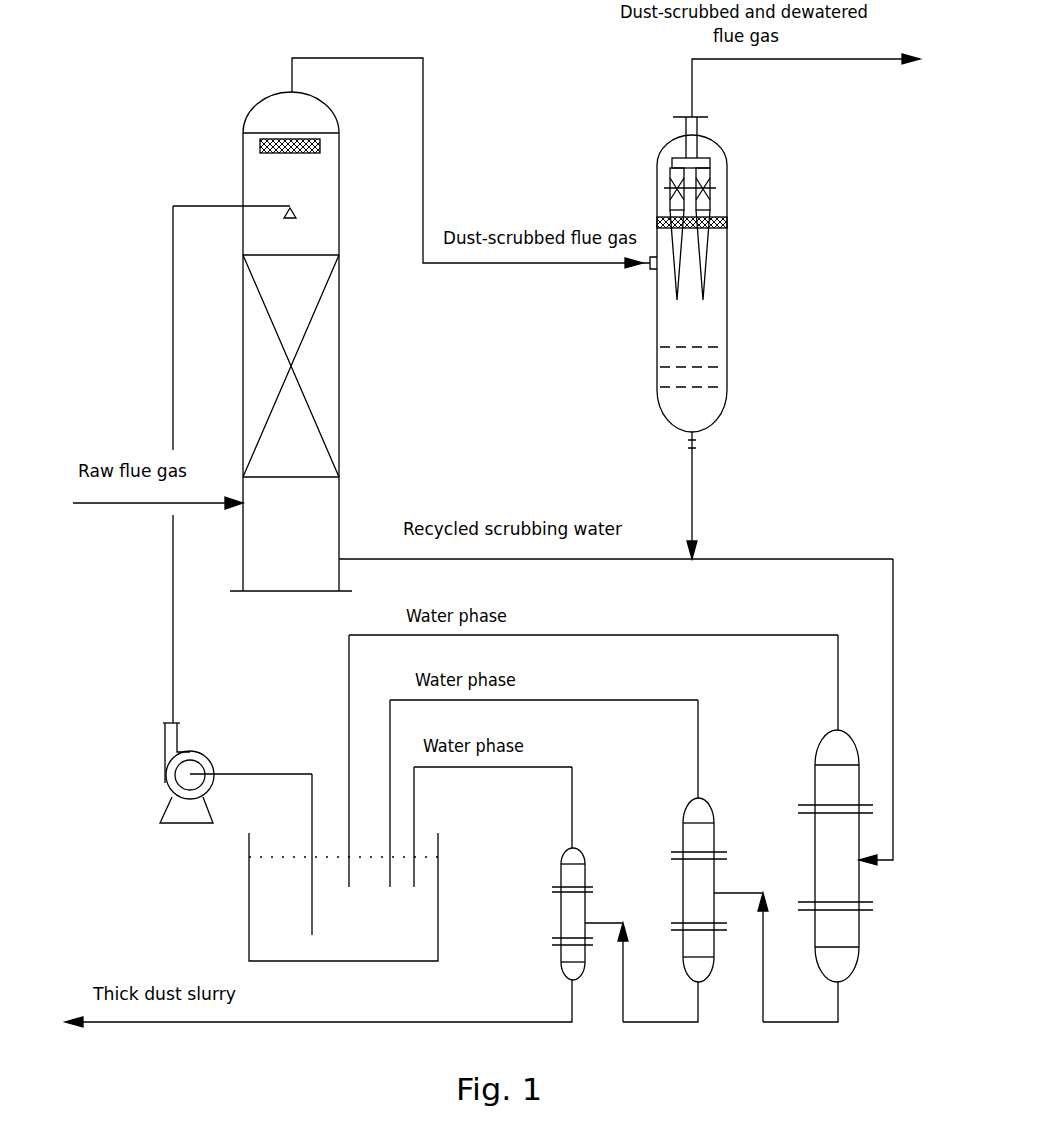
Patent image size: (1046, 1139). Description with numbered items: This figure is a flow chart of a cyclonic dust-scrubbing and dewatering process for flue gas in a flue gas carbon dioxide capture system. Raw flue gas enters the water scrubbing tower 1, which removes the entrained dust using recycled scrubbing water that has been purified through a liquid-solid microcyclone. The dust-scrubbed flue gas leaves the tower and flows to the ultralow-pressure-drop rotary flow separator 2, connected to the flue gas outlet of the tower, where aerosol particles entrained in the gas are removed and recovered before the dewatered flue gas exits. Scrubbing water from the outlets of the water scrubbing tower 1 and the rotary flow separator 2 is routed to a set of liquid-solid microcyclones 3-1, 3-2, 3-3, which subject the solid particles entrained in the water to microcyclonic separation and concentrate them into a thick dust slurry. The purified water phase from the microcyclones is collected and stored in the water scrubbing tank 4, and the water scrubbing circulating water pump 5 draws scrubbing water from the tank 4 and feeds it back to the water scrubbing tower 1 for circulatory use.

The water scrubbing tower 1 is at (483, 324).
The ultralow-pressure-drop rotary flow separator 2 is at (781, 306).
The liquid-solid microcyclone 3-1 is at (828, 790).
The liquid-solid microcyclone 3-2 is at (695, 861).
The liquid-solid microcyclone 3-3 is at (346, 897).
The water scrubbing tank 4 is at (519, 798).
The water scrubbing circulating water pump 5 is at (208, 514).